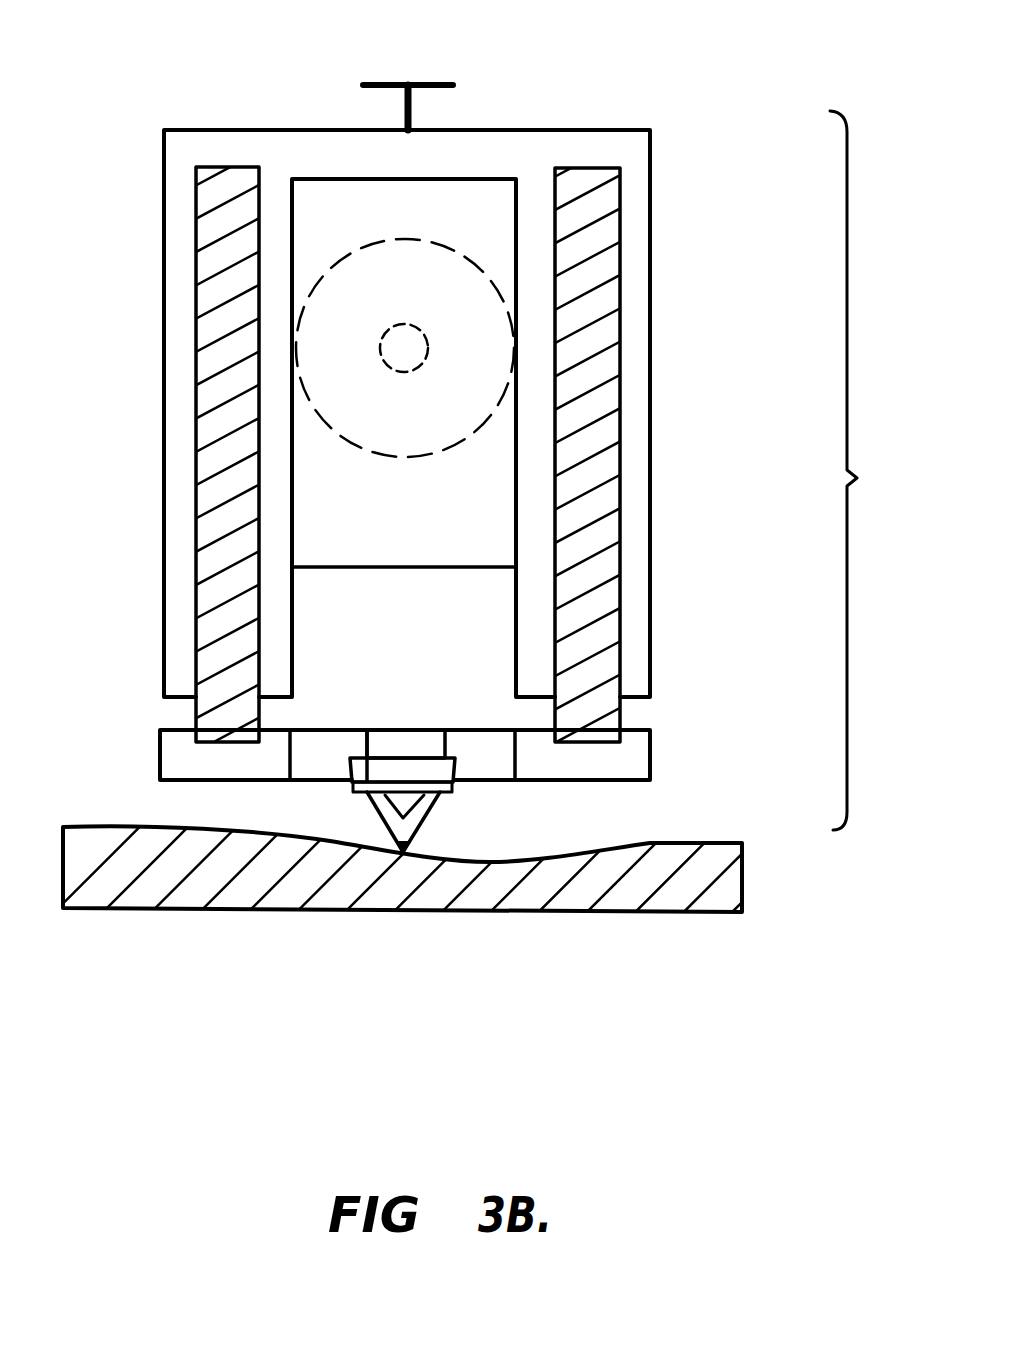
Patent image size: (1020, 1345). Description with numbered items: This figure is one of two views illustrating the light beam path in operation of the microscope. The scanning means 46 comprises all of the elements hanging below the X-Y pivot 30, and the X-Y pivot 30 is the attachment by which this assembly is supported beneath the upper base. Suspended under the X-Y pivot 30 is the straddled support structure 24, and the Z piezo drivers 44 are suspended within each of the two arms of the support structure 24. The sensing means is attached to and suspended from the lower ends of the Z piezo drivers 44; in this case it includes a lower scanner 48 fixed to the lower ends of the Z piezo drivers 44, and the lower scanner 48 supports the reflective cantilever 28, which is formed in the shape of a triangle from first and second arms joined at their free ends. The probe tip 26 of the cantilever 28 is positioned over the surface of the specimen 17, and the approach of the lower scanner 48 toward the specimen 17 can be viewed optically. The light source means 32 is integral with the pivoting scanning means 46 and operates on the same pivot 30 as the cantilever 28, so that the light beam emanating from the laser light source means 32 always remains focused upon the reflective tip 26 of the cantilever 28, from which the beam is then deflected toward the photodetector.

The specimen 17 is at (742, 880).
The straddled support structure 24 is at (650, 167).
The probe tip 26 is at (412, 845).
The cantilever 28 is at (430, 818).
The X-Y pivot 30 is at (422, 84).
The light source means 32 is at (447, 247).
The Z piezo drivers 44 is at (620, 428).
The scanning means 46 is at (873, 470).
The lower scanner 48 is at (655, 748).